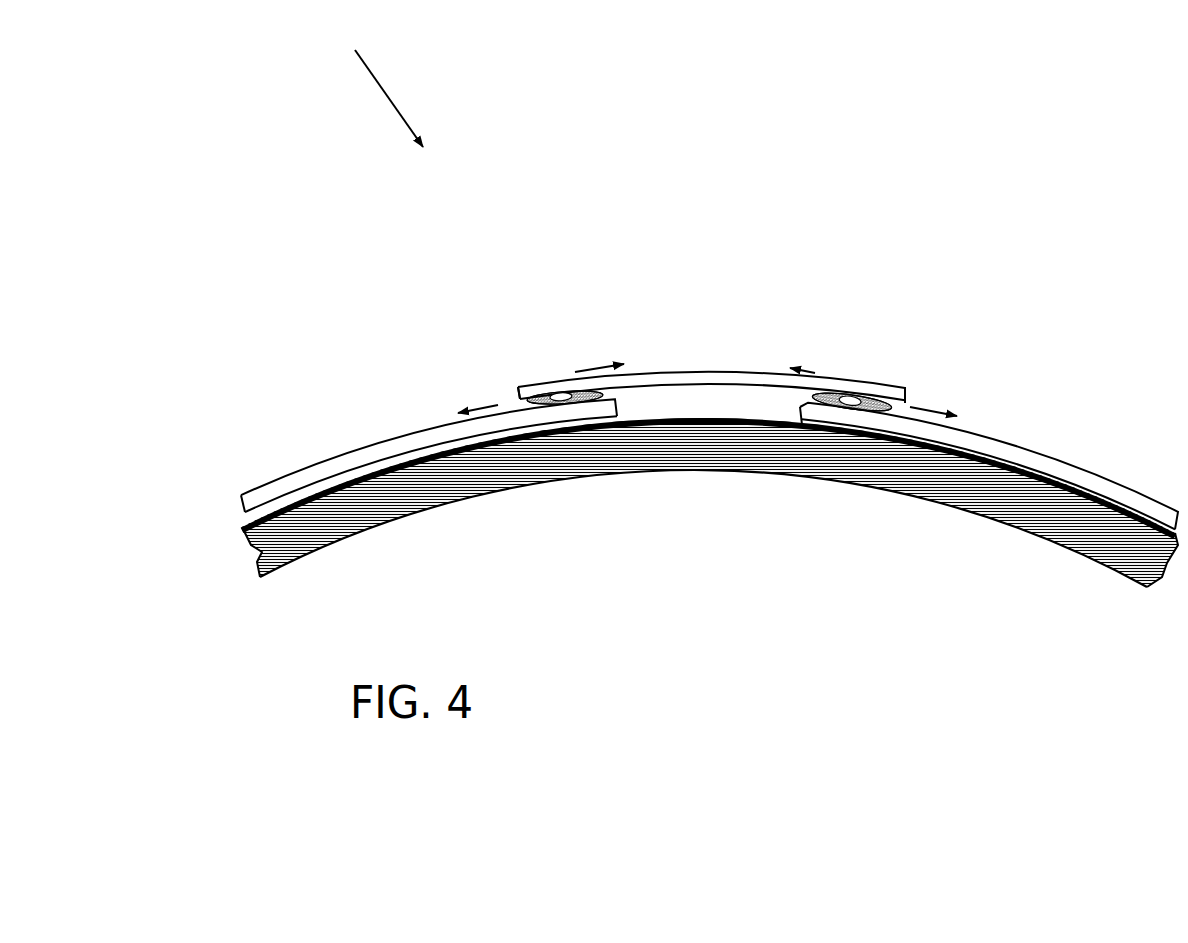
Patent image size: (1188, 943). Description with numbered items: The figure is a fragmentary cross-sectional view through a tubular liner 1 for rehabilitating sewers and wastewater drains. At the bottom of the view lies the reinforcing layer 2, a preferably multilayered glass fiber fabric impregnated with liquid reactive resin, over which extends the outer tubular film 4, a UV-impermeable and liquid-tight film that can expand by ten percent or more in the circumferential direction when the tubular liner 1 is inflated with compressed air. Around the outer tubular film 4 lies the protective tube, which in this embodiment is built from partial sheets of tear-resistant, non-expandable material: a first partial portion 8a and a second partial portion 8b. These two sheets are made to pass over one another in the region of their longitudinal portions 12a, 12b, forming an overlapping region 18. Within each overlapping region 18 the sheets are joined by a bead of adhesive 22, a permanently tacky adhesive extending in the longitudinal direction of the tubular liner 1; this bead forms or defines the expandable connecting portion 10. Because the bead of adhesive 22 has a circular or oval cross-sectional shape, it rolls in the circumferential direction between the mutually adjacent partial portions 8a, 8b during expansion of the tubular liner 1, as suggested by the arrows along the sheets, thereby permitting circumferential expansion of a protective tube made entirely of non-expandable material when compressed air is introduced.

The tubular liner 1 is at (379, 82).
The reinforcing layer 2 is at (348, 522).
The outer tubular film 4 is at (420, 460).
The first partial portion 8a is at (970, 440).
The second partial portion 8b is at (710, 372).
The connecting portion 10 is at (558, 393).
The overlapping region 18 is at (687, 278).
The longitudinal portion 12a is at (571, 385).
The longitudinal portion 12b is at (1010, 265).
The bead of adhesive 22 is at (540, 370).